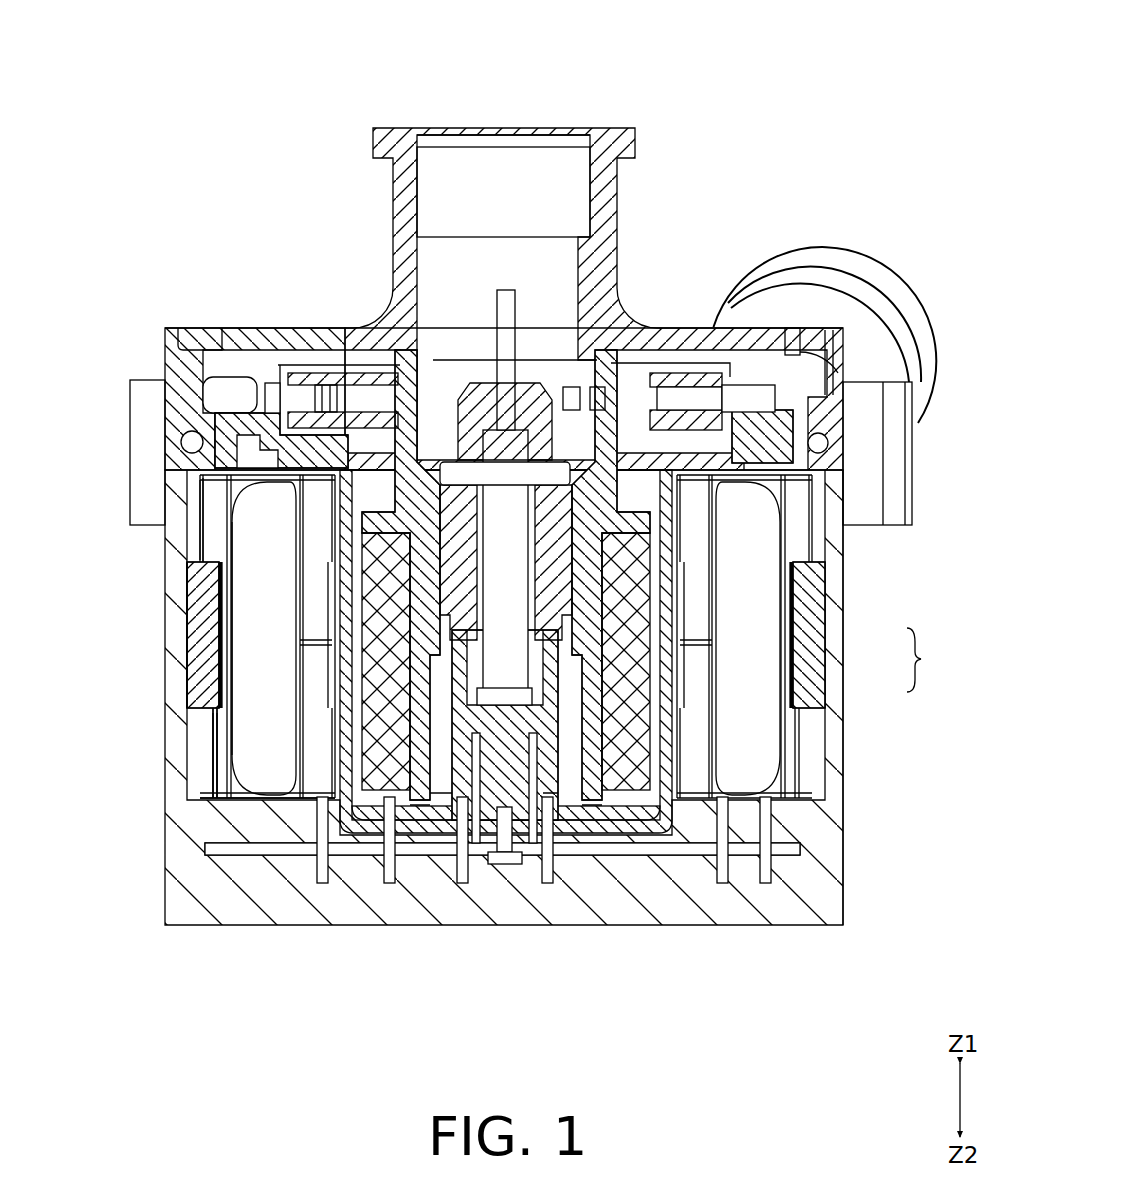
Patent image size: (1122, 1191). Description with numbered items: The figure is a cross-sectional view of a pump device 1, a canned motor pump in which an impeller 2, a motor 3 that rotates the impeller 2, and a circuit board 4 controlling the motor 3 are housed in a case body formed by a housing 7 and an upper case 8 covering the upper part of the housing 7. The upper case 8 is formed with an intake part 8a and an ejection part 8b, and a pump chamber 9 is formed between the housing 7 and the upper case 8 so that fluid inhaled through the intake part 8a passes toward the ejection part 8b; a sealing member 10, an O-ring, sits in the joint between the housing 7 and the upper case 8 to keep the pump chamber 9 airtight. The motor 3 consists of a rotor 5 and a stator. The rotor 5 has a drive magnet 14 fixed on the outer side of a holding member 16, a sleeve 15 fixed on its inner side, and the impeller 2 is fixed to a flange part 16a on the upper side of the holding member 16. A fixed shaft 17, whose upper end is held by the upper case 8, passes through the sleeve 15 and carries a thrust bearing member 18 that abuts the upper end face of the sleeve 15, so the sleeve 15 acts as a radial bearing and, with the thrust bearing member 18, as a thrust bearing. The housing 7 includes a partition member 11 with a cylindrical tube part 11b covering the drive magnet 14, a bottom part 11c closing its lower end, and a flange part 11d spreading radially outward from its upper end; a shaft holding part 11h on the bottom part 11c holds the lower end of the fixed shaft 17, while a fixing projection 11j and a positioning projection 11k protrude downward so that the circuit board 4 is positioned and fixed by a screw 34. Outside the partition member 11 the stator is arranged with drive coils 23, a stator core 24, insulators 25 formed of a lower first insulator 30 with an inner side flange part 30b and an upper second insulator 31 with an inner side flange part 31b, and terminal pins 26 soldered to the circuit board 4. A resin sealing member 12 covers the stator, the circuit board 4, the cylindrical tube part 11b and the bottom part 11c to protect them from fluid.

The pump device 1 is at (824, 66).
The impeller 2 is at (360, 370).
The motor 3 is at (830, 722).
The circuit board 4 is at (806, 849).
The rotor 5 is at (677, 390).
The housing 7 is at (920, 660).
The upper case 8 is at (168, 356).
The intake part 8a is at (618, 192).
The ejection part 8b is at (844, 250).
The pump chamber 9 is at (750, 403).
The sealing member 10 is at (181, 440).
The partition member 11 is at (800, 630).
The cylindrical tube part 11b is at (220, 637).
The bottom part 11c is at (425, 843).
The flange part 11d is at (265, 395).
The shaft holding part 11h is at (455, 683).
The fixing projection 11j is at (537, 853).
The positioning projection 11k is at (600, 820).
The resin sealing member 12 is at (838, 683).
The drive magnet 14 is at (653, 835).
The sleeve 15 is at (613, 470).
The holding member 16 is at (640, 453).
The flange part 16a is at (320, 392).
The fixed shaft 17 is at (495, 420).
The thrust bearing member 18 is at (563, 478).
The drive coils 23 is at (187, 587).
The stator core 24 is at (187, 677).
The insulators 25 is at (215, 813).
The terminal pins 26 is at (322, 885).
The first insulator 30 is at (213, 747).
The inner side flange part 30b is at (215, 793).
The second insulator 31 is at (197, 533).
The inner side flange part 31b is at (227, 560).
The screw 34 is at (505, 866).